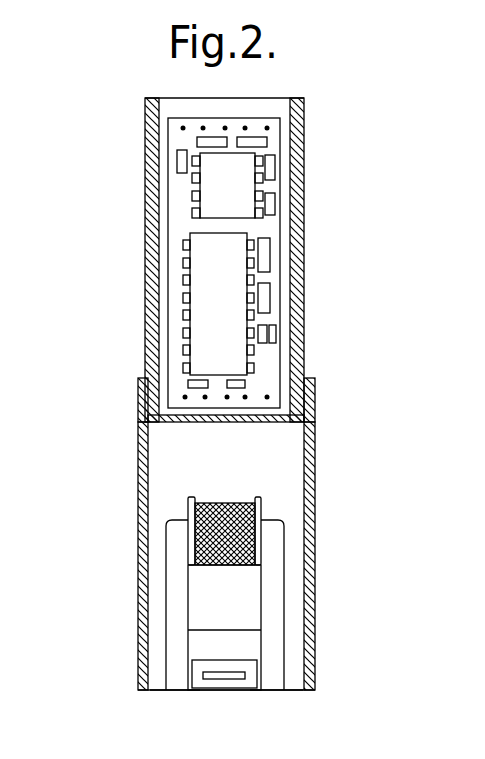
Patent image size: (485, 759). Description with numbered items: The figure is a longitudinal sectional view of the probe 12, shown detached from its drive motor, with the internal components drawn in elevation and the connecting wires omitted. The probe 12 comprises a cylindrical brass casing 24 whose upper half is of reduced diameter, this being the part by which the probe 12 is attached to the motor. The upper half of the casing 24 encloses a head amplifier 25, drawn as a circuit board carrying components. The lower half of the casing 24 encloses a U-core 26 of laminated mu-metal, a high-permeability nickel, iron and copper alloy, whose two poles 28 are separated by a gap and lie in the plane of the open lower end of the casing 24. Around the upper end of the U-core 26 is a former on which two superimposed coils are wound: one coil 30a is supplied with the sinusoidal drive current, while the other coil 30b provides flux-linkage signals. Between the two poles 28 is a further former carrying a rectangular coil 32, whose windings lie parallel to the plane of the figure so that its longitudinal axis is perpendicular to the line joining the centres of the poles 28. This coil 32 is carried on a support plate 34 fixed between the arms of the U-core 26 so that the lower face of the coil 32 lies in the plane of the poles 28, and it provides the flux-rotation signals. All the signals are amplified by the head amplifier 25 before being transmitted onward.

The probe 12 is at (316, 398).
The cylindrical brass casing 24 is at (308, 491).
The head amplifier 25 is at (232, 352).
The U-core 26 is at (177, 606).
The poles 28 is at (180, 690).
The coil 30a is at (188, 513).
The coil 30b is at (261, 511).
The rectangular coil 32 is at (248, 675).
The support plate 34 is at (250, 642).